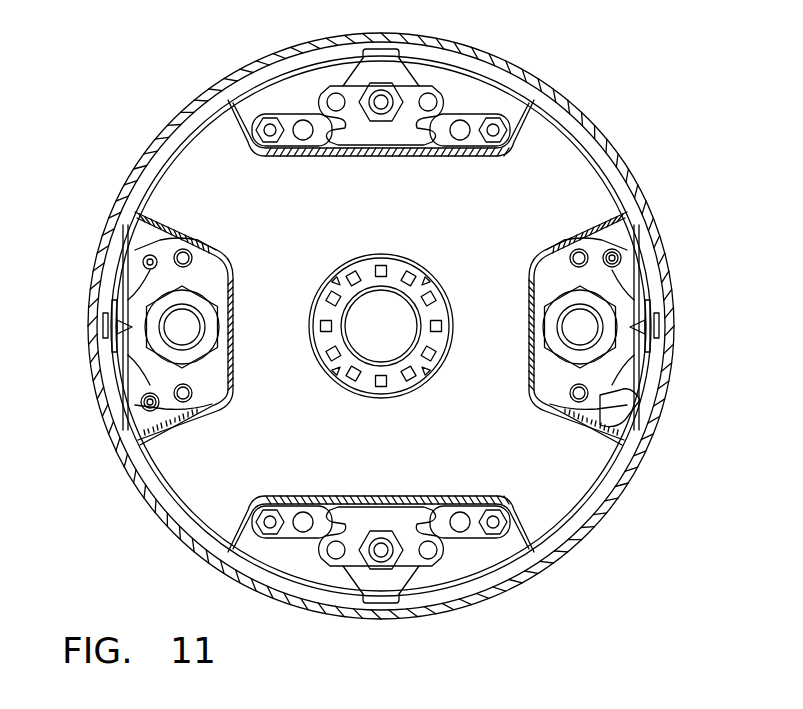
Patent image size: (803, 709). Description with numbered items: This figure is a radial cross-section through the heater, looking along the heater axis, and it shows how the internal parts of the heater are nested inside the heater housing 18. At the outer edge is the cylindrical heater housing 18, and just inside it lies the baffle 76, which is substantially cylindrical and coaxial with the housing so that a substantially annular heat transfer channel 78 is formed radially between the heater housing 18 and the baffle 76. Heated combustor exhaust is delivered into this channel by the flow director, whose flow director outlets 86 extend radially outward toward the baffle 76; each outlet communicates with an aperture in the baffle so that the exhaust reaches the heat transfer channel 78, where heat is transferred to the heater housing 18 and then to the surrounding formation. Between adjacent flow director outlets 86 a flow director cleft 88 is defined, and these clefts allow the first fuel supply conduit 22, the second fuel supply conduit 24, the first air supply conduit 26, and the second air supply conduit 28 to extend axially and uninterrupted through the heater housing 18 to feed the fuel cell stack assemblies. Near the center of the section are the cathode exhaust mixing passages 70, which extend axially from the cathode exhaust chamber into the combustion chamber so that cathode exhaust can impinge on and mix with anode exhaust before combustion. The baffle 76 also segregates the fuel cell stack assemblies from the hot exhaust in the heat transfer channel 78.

The heater housing 18 is at (232, 72).
The first fuel supply conduit 22 is at (387, 552).
The second fuel supply conduit 24 is at (381, 100).
The first air supply conduit 26 is at (172, 333).
The second air supply conduit 28 is at (593, 327).
The cathode exhaust mixing passages 70 is at (425, 305).
The baffle 76 is at (638, 417).
The heat transfer channel 78 is at (540, 87).
The flow director outlets 86 is at (208, 148).
The flow director cleft 88 is at (618, 252).